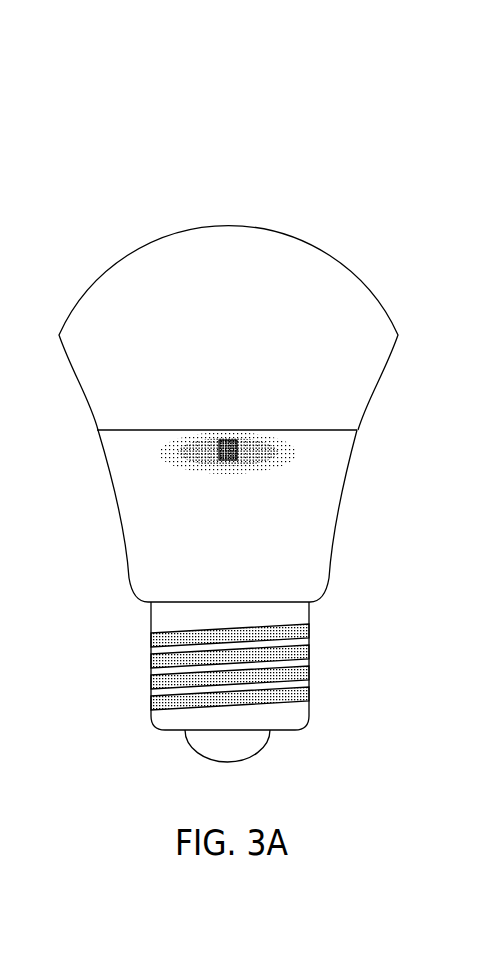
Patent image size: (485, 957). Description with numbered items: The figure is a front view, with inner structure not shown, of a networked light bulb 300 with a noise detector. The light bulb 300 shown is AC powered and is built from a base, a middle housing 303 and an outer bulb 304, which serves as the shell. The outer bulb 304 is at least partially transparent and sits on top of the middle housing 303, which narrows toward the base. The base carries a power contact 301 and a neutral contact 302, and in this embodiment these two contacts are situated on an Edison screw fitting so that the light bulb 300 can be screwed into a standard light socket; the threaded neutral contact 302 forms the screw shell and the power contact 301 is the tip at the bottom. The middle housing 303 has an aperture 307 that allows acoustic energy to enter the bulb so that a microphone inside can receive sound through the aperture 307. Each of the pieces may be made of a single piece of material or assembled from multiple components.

The networked light bulb 300 is at (359, 88).
The outer bulb 304 is at (484, 165).
The middle housing 303 is at (328, 573).
The aperture 307 is at (217, 450).
The neutral contact 302 is at (310, 710).
The power contact 301 is at (240, 762).